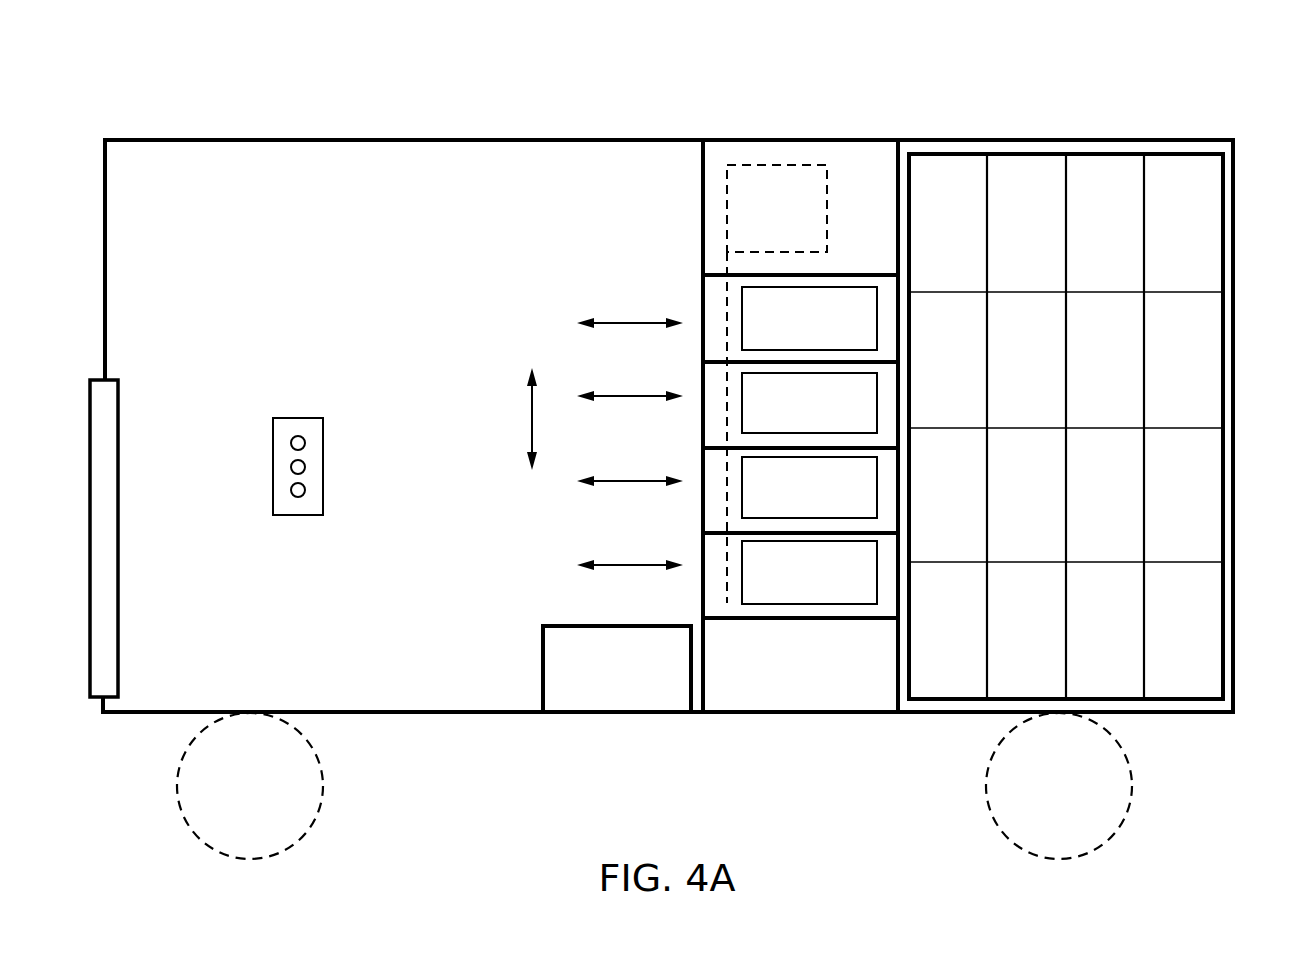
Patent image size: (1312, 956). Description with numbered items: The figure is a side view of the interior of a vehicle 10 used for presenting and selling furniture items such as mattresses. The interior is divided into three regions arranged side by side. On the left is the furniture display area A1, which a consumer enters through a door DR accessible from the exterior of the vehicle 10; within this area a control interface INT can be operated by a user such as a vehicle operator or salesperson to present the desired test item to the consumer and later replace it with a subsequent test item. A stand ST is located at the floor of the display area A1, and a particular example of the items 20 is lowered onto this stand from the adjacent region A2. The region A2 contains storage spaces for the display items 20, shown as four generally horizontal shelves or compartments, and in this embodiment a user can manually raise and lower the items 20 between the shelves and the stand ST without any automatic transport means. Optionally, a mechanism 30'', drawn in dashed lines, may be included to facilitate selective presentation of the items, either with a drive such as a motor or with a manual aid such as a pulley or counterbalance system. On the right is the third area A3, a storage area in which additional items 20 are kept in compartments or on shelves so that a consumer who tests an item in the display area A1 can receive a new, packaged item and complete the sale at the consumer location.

The vehicle 10 is at (116, 99).
The items 20 is at (820, 520).
The mechanism 30'' is at (777, 384).
The display area A1 is at (410, 172).
The second area A2 is at (858, 172).
The third area A3 is at (1105, 185).
The control interface INT is at (299, 424).
The door DR is at (103, 539).
The stand ST is at (617, 680).